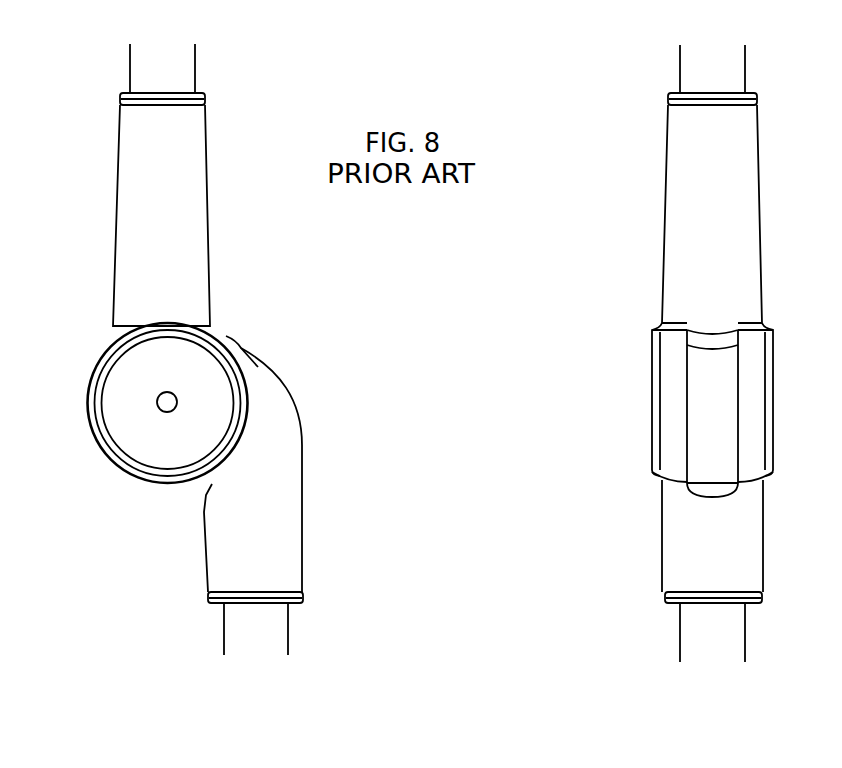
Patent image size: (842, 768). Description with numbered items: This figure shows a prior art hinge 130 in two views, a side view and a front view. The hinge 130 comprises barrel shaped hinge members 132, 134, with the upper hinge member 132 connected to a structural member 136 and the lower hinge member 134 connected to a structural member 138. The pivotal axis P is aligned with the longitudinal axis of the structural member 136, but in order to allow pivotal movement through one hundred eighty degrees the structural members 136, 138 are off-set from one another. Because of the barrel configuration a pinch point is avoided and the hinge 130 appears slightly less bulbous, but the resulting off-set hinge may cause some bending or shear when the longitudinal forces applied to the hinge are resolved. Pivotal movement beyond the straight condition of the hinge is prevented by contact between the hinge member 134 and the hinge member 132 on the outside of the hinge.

The prior art hinge 130 is at (126, 510).
The hinge member 132 is at (190, 298).
The hinge member 134 is at (282, 478).
The structural member 136 is at (175, 73).
The structural member 138 is at (277, 630).
The pivotal axis P is at (176, 397).